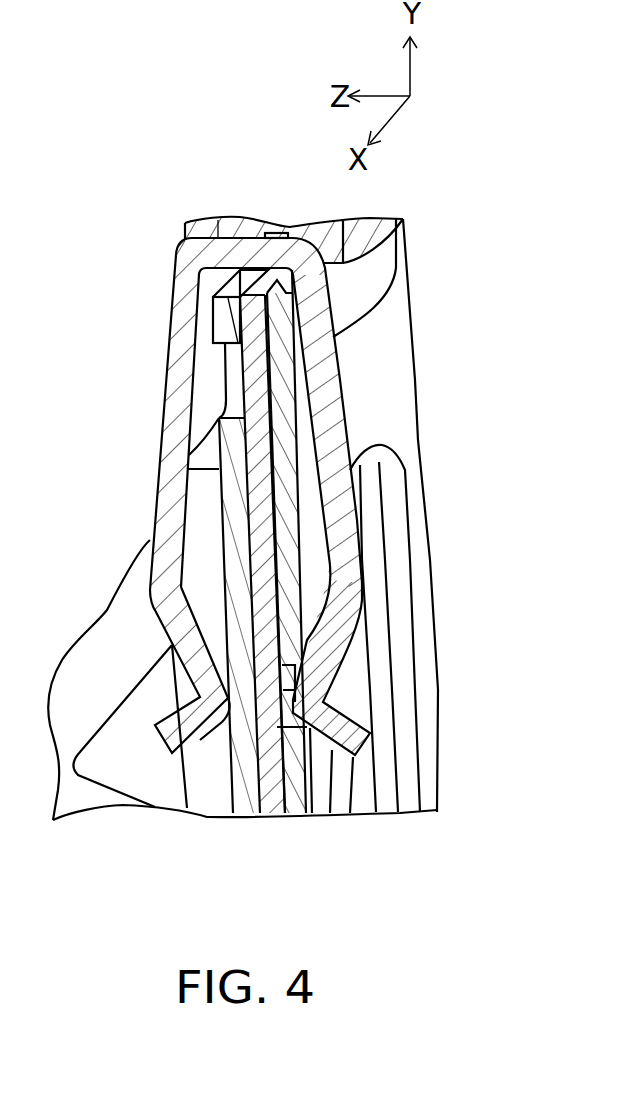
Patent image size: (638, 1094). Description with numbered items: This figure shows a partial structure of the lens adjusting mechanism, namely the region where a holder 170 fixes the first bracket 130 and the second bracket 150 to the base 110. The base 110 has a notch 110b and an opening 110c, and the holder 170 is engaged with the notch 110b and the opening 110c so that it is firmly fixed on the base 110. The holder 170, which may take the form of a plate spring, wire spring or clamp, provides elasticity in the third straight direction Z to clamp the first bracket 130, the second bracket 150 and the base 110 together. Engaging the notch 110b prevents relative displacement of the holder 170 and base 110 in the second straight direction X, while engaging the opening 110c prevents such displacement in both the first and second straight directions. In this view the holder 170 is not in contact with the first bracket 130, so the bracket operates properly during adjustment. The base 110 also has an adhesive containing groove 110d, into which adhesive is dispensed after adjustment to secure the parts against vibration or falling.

The base 110 is at (378, 378).
The notch 110b is at (265, 311).
The opening 110c is at (271, 790).
The adhesive containing groove 110d is at (382, 270).
The first bracket 130 is at (263, 573).
The second bracket 150 is at (245, 775).
The holder 170 is at (178, 437).